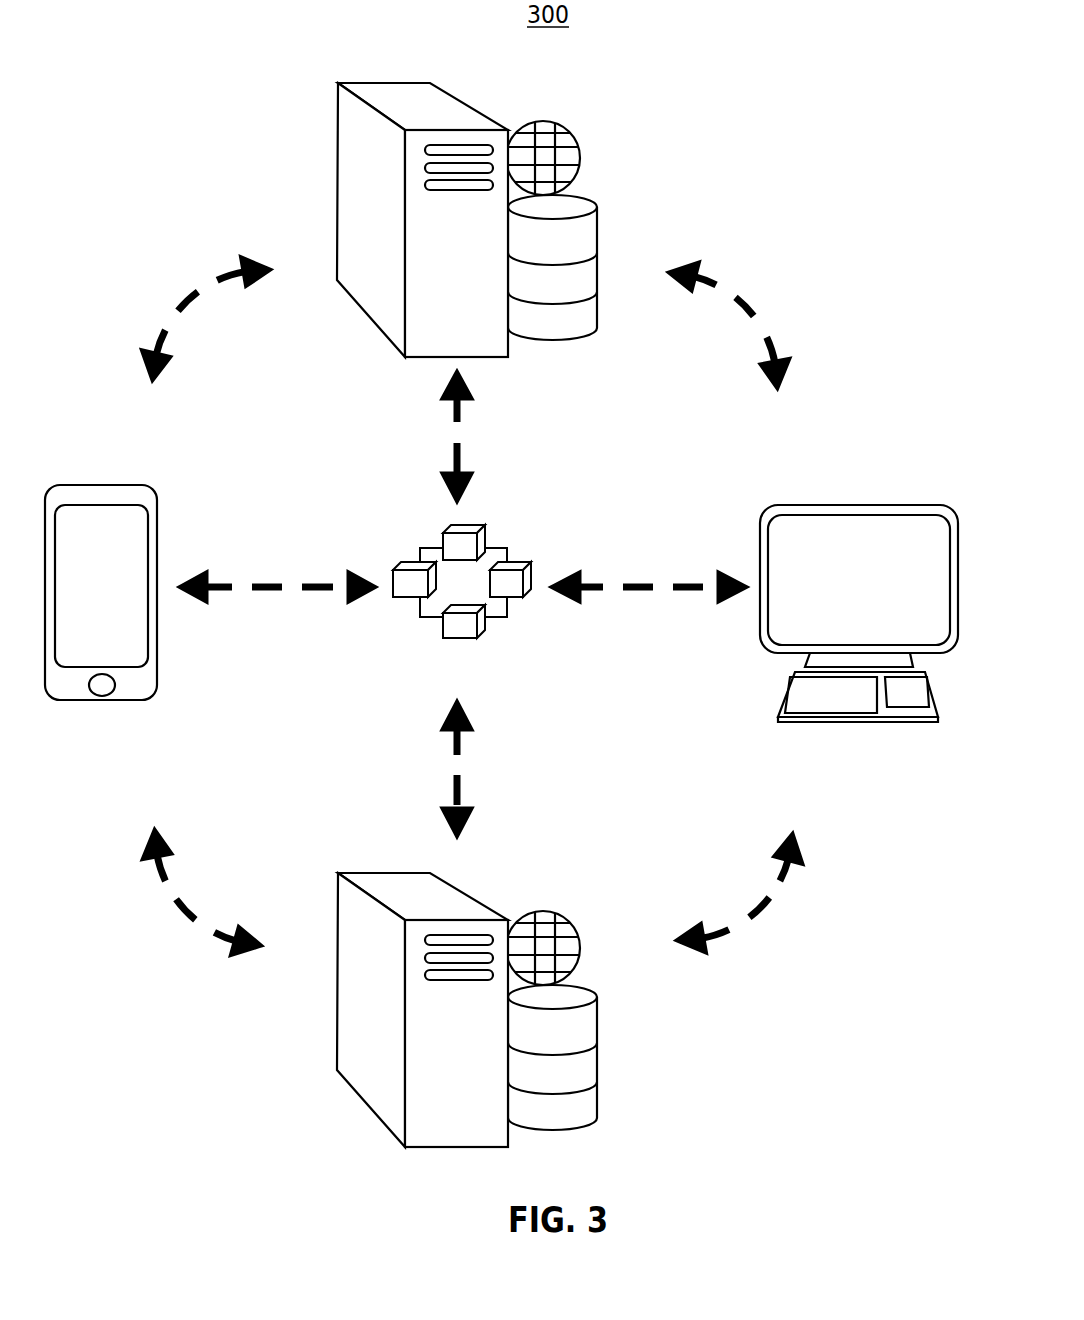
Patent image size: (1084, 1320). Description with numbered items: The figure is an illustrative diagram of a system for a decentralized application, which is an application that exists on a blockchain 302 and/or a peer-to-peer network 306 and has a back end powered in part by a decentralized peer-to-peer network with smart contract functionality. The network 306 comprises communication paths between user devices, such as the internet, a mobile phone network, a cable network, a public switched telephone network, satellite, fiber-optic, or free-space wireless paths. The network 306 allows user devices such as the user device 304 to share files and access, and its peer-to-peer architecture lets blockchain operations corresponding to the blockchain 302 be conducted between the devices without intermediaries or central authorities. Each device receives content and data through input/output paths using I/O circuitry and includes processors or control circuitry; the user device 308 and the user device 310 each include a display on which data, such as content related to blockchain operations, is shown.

The blockchain 302 is at (510, 652).
The user device 304 is at (555, 362).
The network 306 is at (187, 270).
The user device 308 is at (140, 722).
The user device 310 is at (753, 673).